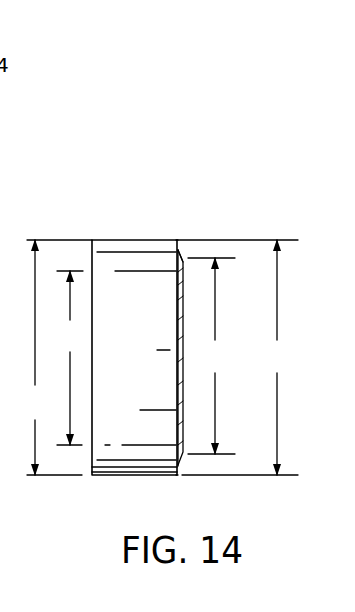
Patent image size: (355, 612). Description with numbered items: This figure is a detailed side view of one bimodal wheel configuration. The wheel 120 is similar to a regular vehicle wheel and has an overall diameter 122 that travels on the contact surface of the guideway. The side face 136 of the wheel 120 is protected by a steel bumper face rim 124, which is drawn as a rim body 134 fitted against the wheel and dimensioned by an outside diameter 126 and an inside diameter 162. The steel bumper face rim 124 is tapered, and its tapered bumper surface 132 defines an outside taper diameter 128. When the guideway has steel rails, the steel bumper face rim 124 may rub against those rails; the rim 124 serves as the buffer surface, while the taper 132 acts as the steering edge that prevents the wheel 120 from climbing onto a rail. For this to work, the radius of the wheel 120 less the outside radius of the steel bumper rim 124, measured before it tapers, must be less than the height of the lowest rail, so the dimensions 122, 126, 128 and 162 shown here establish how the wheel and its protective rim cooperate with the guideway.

The wheel 120 is at (214, 137).
The diameter 122 is at (237, 357).
The steel bumper face rim 124 is at (183, 257).
The outside diameter 126 is at (211, 356).
The outside taper diameter 128 is at (55, 357).
The tapered bumper surface 132 is at (182, 250).
The body 134 is at (113, 239).
The side face 136 is at (178, 250).
The inside diameter 162 is at (68, 358).